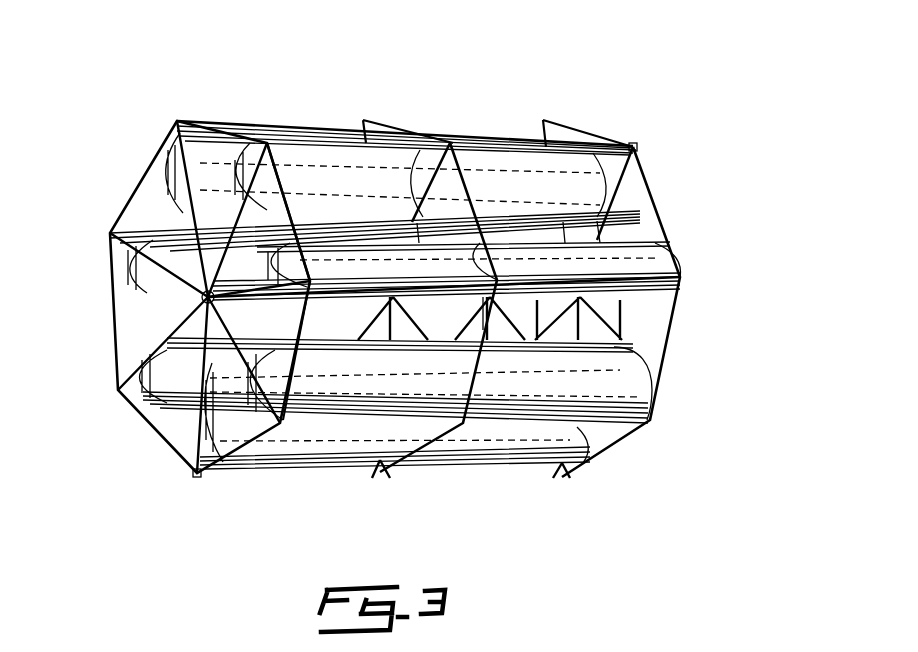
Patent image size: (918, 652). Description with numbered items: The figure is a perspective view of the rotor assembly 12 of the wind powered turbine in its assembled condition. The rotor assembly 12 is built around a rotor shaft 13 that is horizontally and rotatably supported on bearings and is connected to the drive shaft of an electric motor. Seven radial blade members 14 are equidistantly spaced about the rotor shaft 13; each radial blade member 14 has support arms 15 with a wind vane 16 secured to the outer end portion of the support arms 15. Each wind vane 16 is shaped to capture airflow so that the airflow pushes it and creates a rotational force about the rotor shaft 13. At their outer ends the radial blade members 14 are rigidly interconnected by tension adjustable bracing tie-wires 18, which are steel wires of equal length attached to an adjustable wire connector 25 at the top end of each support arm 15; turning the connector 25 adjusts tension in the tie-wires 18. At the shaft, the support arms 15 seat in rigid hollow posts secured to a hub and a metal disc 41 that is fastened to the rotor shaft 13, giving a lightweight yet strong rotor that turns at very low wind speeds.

The rotor assembly 12 is at (695, 221).
The rotor shaft 13 is at (190, 297).
The radial blade member 14 is at (578, 125).
The support arm 15 is at (680, 277).
The wind vane 16 is at (200, 160).
The tension adjustable bracing tie-wire 18 is at (465, 185).
The adjustable wire connector 25 is at (636, 146).
The metal disc 41 is at (297, 433).